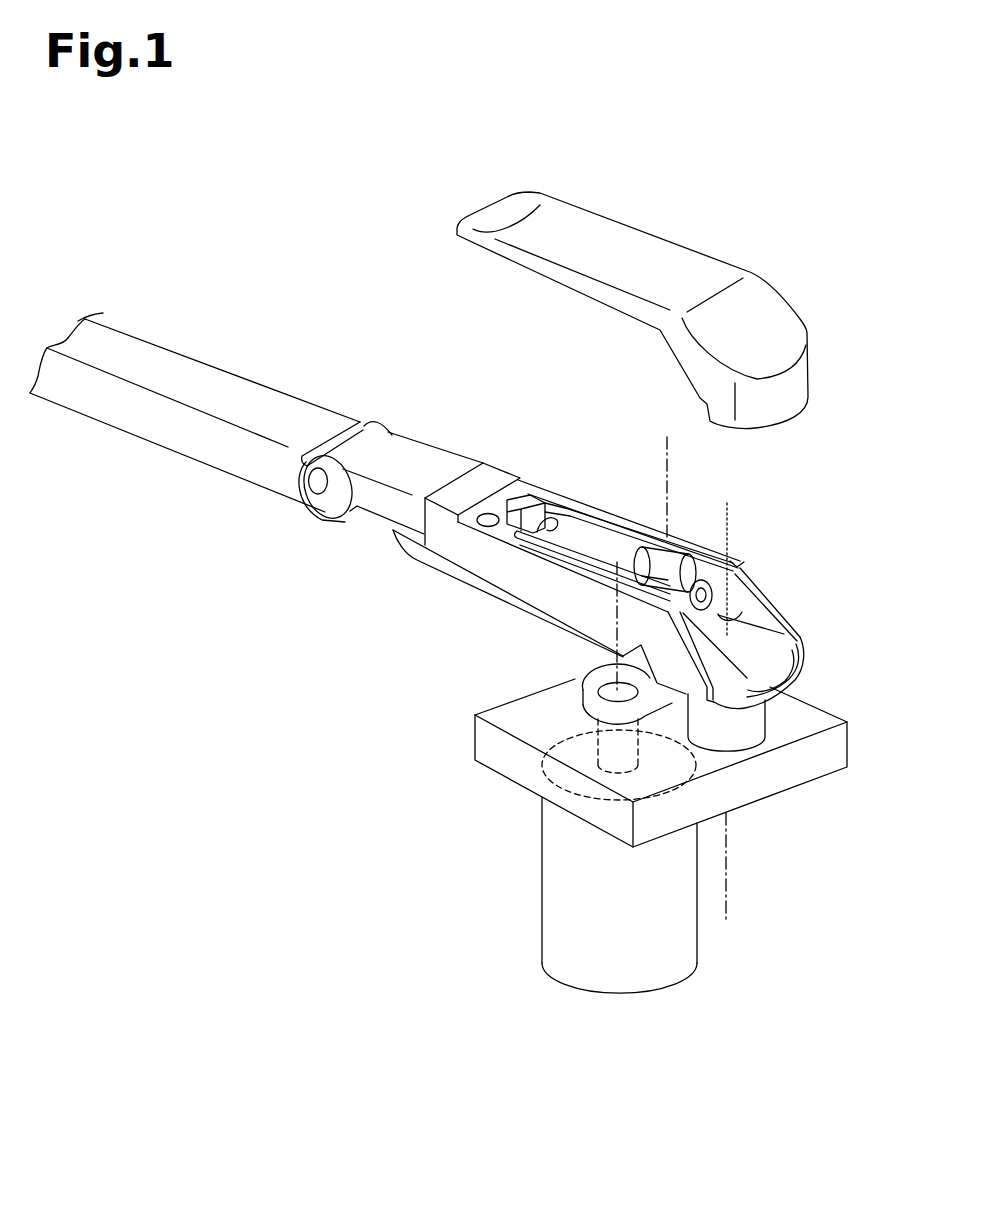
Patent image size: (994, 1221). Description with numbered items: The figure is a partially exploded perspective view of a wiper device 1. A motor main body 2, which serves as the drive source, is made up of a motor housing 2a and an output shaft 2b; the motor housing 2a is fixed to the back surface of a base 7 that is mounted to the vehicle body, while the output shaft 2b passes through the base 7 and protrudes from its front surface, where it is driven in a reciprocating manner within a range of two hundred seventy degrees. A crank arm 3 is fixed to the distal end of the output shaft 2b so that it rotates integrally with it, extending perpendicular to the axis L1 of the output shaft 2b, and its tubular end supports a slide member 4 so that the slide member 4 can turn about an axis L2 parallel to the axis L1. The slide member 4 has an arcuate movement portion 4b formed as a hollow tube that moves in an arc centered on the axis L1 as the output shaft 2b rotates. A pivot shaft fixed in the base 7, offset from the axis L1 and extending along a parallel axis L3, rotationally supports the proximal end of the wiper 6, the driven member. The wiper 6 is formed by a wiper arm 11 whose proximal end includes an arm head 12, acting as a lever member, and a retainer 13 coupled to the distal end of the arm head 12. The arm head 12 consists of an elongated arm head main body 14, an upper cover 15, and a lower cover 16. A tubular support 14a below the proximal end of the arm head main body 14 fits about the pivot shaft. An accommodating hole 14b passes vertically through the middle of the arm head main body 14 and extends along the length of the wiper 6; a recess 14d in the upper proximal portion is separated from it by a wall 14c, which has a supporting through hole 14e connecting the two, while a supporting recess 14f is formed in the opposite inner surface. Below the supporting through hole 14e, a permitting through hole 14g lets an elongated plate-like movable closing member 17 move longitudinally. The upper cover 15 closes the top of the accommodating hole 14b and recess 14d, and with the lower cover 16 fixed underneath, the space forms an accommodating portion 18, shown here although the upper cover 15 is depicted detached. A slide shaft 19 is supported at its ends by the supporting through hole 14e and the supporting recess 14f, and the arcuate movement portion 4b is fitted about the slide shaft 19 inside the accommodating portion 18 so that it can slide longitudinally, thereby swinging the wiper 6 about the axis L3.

The wiper device 1 is at (322, 193).
The motor main body 2 is at (534, 912).
The motor housing 2a is at (697, 942).
The output shaft 2b is at (638, 753).
The crank arm 3 is at (649, 708).
The slide member 4 is at (676, 550).
The arcuate movement portion 4b is at (643, 546).
The wiper 6 is at (171, 308).
The base 7 is at (826, 768).
The wiper arm 11 is at (352, 343).
The arm head 12 is at (425, 409).
The retainer 13 is at (356, 393).
The arm head main body 14 is at (452, 545).
The tubular support 14a is at (765, 722).
The accommodating hole 14b is at (606, 535).
The wall 14c is at (700, 578).
The recess 14d is at (758, 610).
The supporting through hole 14e is at (737, 565).
The supporting recess 14f is at (548, 502).
The permitting through hole 14g is at (722, 612).
The upper cover 15 is at (670, 250).
The lower cover 16 is at (461, 580).
The movable closing member 17 is at (791, 630).
The accommodating portion 18 is at (579, 518).
The slide shaft 19 is at (580, 560).
The axis of the output shaft L1 is at (612, 645).
The axis of the tubular portion L2 is at (667, 437).
The axis of the pivot shaft L3 is at (728, 505).